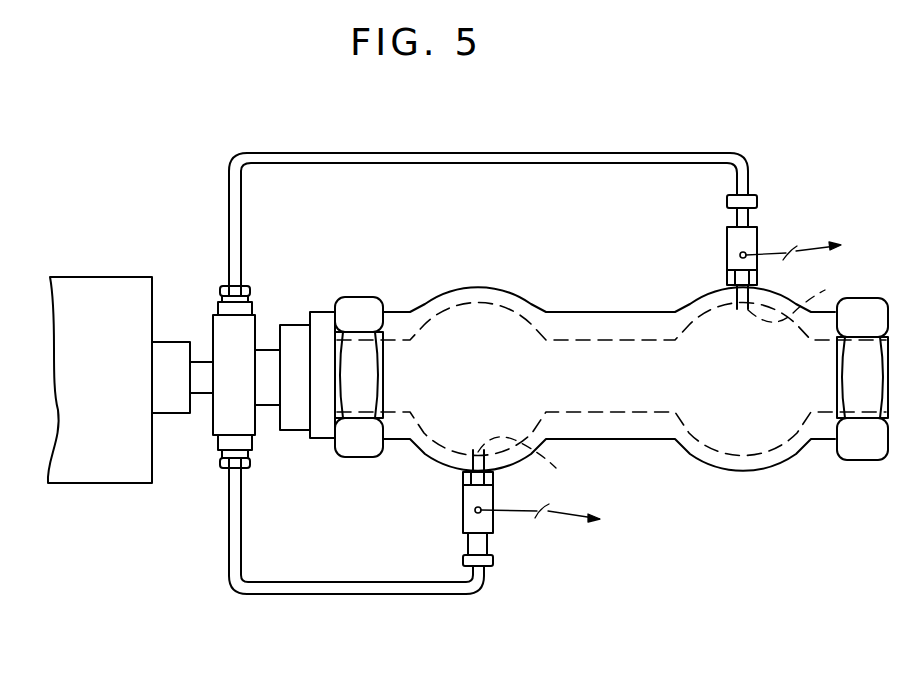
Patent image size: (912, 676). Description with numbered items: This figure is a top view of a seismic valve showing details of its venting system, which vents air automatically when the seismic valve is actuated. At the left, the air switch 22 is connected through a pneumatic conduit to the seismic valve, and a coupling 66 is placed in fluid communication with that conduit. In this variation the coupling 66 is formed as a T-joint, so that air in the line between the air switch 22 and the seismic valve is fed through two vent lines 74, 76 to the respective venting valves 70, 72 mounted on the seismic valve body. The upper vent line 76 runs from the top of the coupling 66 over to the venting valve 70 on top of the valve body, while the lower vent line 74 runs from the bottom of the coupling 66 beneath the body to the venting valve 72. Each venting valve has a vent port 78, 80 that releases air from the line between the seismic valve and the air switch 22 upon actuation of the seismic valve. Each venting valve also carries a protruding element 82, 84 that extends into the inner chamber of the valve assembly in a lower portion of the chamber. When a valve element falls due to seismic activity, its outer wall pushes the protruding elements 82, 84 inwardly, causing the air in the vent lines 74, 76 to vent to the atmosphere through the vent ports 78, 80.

The air switch 22 is at (95, 277).
The coupling 66 is at (213, 322).
The venting valve 70 is at (727, 237).
The venting valve 72 is at (463, 512).
The vent line 74 is at (357, 596).
The vent line 76 is at (608, 153).
The vent port 78 is at (740, 256).
The vent port 80 is at (481, 513).
The protruding element 82 is at (556, 468).
The protruding element 84 is at (825, 290).